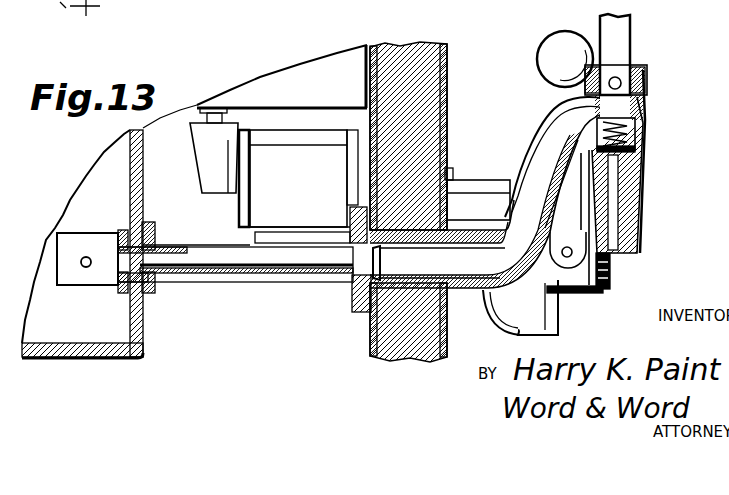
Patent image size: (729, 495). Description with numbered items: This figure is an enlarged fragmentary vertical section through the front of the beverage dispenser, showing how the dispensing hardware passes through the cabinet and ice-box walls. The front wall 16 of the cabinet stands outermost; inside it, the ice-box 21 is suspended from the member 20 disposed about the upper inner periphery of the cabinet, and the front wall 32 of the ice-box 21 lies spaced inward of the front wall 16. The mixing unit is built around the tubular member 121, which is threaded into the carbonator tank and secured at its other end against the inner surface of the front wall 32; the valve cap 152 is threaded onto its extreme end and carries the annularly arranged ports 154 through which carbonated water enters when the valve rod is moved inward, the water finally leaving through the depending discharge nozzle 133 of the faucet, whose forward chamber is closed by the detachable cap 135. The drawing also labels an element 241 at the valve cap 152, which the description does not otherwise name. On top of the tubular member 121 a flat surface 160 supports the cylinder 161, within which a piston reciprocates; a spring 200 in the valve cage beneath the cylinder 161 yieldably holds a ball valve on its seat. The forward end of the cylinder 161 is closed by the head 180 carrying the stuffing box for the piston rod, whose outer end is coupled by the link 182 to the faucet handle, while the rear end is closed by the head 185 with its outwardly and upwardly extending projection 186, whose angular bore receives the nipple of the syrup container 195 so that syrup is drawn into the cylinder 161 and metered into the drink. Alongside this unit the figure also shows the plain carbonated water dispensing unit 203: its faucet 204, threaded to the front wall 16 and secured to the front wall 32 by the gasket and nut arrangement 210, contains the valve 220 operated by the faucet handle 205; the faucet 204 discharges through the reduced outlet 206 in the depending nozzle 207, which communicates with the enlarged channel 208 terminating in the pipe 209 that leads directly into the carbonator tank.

The front wall 16 is at (442, 100).
The member 20 is at (57, 358).
The ice-box 21 is at (377, 357).
The front wall of the ice-box 32 is at (378, 335).
The tubular member 121 is at (188, 245).
The discharge nozzle 133 is at (560, 322).
The detachable cap 135 is at (610, 281).
The valve cap 152 is at (72, 286).
The ports 154 is at (50, 232).
The flat surface 160 is at (278, 233).
The cylinder 161 is at (282, 152).
The head 180 is at (340, 128).
The link 182 is at (485, 188).
The head 185 is at (238, 207).
The projection 186 is at (205, 150).
The syrup container 195 is at (283, 80).
The spring 200 is at (553, 47).
The dispensing unit 203 is at (323, 257).
The faucet 204 is at (533, 148).
The faucet handle 205 is at (618, 44).
The reduced outlet 206 is at (615, 268).
The depending nozzle 207 is at (636, 213).
The enlarged channel 208 is at (485, 297).
The pipe 209 is at (270, 258).
The gasket and nut arrangement 210 is at (353, 312).
The valve 220 is at (643, 138).
The pin hole 241 is at (86, 257).